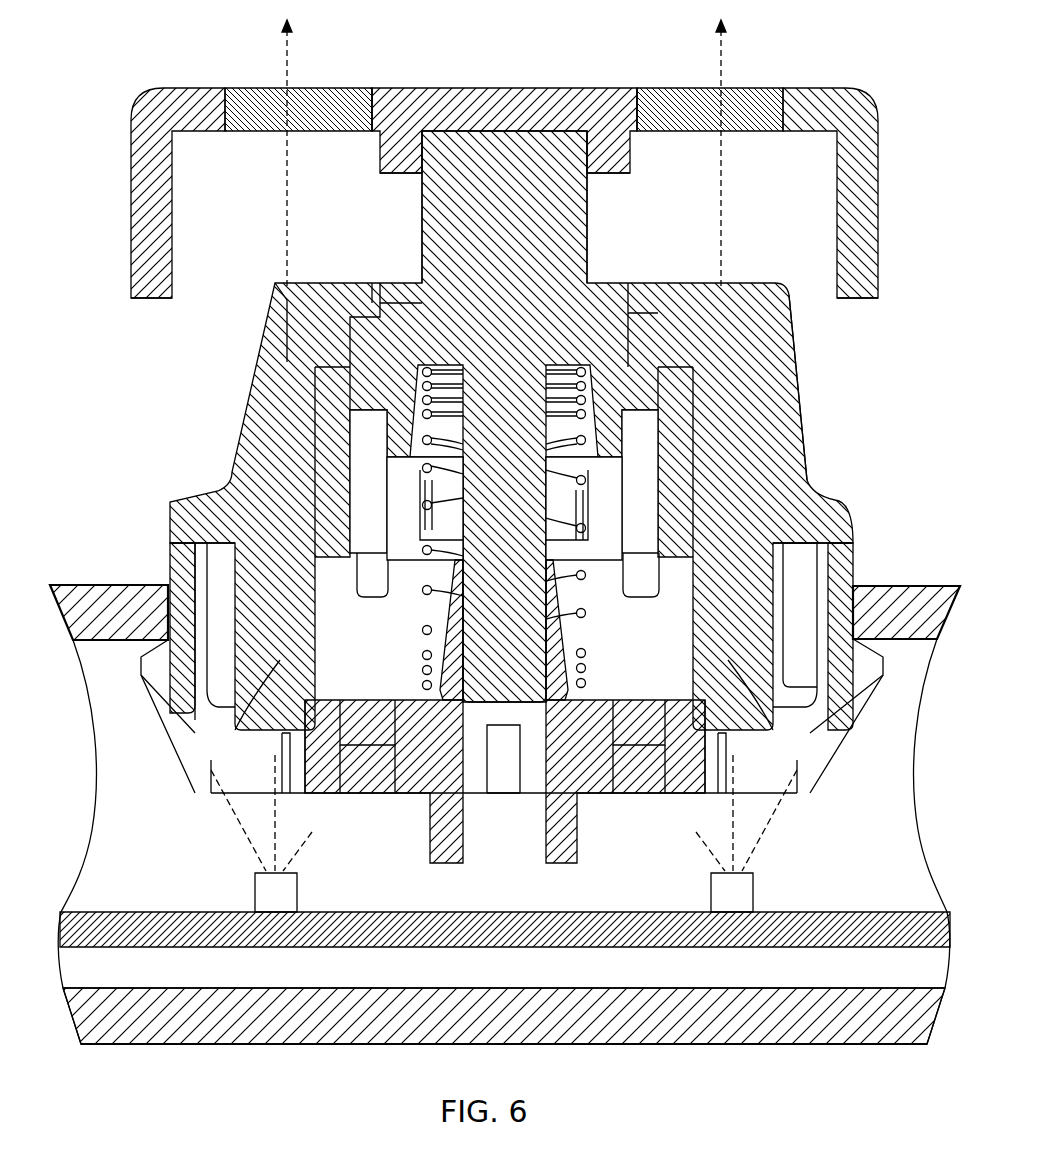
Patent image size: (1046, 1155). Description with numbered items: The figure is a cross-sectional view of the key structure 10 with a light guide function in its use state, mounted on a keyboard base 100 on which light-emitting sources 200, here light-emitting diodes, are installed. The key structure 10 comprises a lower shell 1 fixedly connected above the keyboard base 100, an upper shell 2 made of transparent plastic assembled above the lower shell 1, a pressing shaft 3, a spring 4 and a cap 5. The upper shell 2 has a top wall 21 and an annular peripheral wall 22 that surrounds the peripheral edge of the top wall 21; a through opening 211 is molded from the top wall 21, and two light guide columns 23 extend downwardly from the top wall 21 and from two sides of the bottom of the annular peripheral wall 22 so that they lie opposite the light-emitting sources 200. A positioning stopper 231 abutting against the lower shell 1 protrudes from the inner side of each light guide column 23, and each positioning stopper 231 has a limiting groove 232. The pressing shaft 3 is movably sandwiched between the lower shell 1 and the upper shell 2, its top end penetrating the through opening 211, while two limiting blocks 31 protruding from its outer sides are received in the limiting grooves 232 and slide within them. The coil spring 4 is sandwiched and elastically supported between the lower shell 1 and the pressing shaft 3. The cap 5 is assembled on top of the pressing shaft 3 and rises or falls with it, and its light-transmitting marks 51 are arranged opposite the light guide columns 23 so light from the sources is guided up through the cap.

The lower shell 1 is at (887, 678).
The upper shell 2 is at (808, 344).
The pressing shaft 3 is at (606, 274).
The spring 4 is at (583, 528).
The cap 5 is at (508, 85).
The key structure 10 is at (216, 392).
The top wall 21 is at (737, 280).
The annular peripheral wall 22 is at (783, 395).
The light guide column 23 is at (236, 708).
The limiting block 31 is at (323, 430).
The light-transmitting mark 51 is at (262, 94).
The keyboard base 100 is at (121, 574).
The light-emitting source 200 is at (263, 892).
The through opening 211 is at (393, 280).
The positioning stopper 231 is at (355, 655).
The limiting groove 232 is at (340, 650).